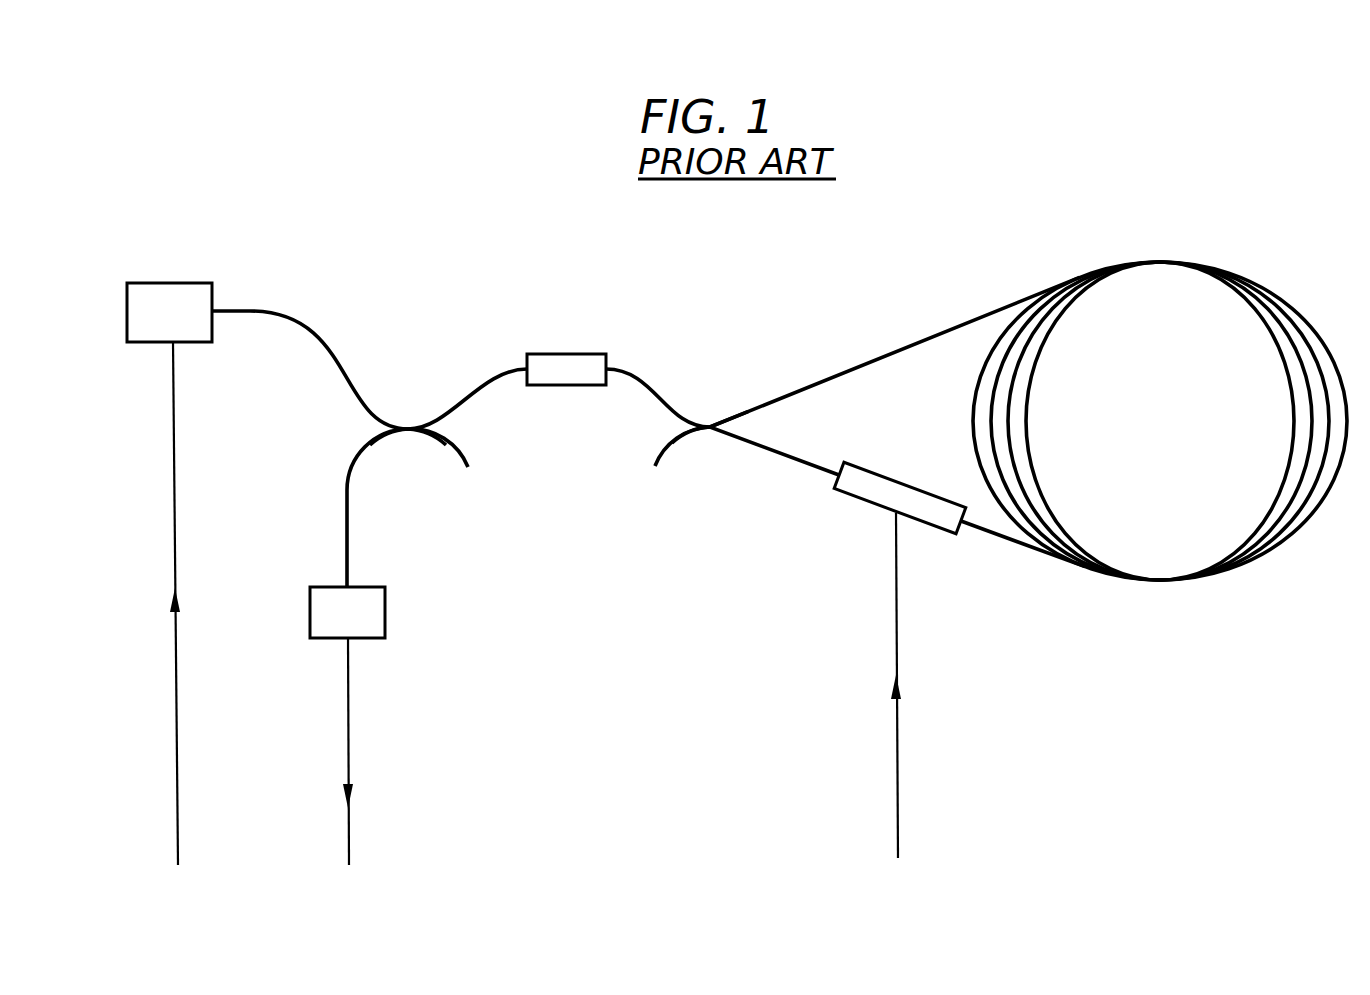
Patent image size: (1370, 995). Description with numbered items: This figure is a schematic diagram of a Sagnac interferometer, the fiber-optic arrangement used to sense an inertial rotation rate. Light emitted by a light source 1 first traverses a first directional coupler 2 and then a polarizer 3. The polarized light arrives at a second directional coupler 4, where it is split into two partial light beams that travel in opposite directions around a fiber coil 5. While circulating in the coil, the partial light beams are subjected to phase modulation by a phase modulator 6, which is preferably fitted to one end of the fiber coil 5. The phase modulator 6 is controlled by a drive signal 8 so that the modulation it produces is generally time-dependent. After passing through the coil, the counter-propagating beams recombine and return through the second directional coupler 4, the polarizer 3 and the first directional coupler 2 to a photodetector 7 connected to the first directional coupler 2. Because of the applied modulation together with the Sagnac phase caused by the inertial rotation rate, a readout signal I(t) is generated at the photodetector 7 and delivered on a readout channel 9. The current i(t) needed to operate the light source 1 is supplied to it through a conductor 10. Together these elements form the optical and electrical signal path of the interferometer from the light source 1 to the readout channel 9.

The light source 1 is at (170, 298).
The first directional coupler 2 is at (408, 427).
The polarizer 3 is at (560, 372).
The second directional coupler 4 is at (711, 426).
The fiber coil 5 is at (1065, 520).
The phase modulator 6 is at (927, 511).
The photodetector 7 is at (385, 608).
The drive signal 8 is at (897, 742).
The readout channel 9 is at (349, 722).
The conductor 10 is at (176, 727).